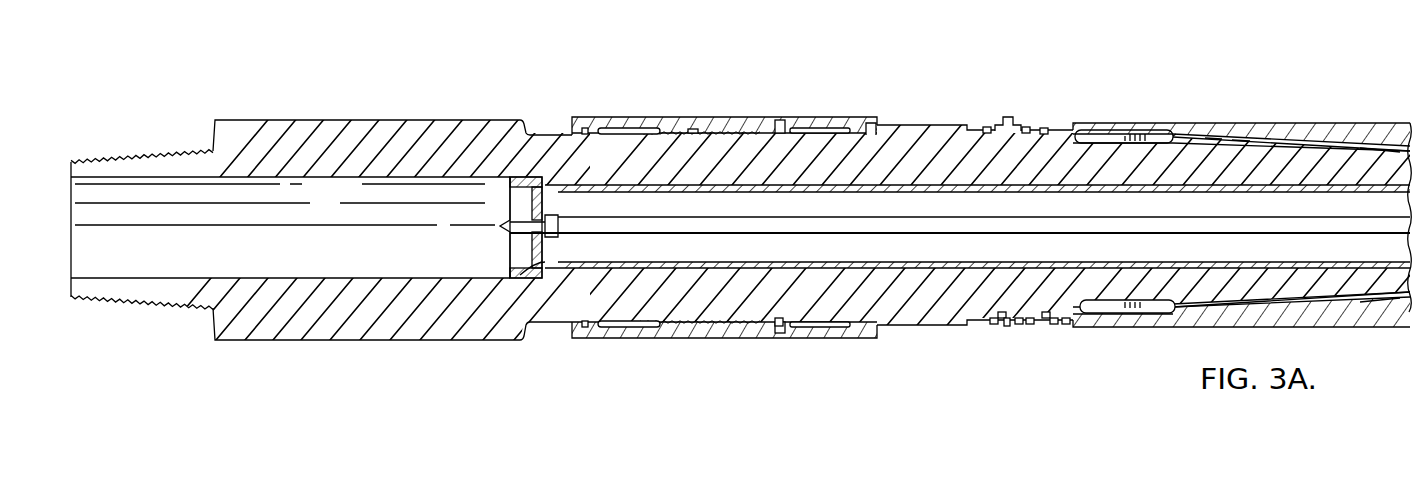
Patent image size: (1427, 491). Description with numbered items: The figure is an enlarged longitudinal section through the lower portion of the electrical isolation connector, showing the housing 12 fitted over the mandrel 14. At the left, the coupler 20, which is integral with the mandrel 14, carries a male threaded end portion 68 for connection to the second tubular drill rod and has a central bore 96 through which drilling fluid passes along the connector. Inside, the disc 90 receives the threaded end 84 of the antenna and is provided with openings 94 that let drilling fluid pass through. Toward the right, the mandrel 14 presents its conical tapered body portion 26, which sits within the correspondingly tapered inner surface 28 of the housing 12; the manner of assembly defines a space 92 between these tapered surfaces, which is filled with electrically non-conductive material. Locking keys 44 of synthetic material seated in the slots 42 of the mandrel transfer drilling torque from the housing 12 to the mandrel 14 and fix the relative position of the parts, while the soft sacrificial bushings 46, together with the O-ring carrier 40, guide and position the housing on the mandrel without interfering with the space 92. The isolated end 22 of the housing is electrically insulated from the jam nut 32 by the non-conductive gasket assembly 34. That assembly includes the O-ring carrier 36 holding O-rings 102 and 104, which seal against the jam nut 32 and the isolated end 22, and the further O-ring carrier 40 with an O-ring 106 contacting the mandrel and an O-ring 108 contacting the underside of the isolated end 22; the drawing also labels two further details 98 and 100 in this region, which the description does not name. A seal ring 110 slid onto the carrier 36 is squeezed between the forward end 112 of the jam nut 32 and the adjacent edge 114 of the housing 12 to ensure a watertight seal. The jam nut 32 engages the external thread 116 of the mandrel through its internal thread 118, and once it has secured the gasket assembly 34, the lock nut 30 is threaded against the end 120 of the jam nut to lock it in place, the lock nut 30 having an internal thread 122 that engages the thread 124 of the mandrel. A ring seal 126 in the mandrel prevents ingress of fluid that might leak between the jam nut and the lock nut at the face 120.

The housing 12 is at (1292, 118).
The mandrel 14 is at (1176, 158).
The coupler 20 is at (288, 118).
The isolated end 22 is at (1024, 126).
The conical tapered body portion 26 is at (1212, 150).
The tapered inner surface 28 is at (1322, 144).
The lock nut 30 is at (660, 118).
The jam nut 32 is at (900, 125).
The gasket assembly 34 is at (1000, 110).
The O-ring carrier 36 is at (1010, 312).
The O-ring carrier 40 is at (1058, 326).
The slots 42 is at (1120, 301).
The locking keys 44 is at (1100, 137).
The sacrificial bushings 46 is at (1382, 152).
The male threaded end portion 68 is at (126, 145).
The threaded end 84 is at (508, 225).
The disc 90 is at (538, 180).
The space 92 is at (1242, 150).
The openings 94 is at (515, 290).
The central bore 96 is at (348, 190).
The groove 98 is at (1168, 136).
The seal ring 100 is at (1053, 128).
The O-ring 102 is at (1022, 326).
The O-ring 104 is at (993, 326).
The O-ring 106 is at (1046, 312).
The O-ring 108 is at (1068, 324).
The seal ring 110 is at (1008, 328).
The forward end 112 is at (995, 128).
The adjacent edge 114 is at (1017, 328).
The external thread 116 is at (870, 134).
The internal thread 118 is at (852, 127).
The end 120 is at (780, 126).
The internal thread 122 is at (675, 128).
The thread 124 is at (694, 136).
The ring seal 126 is at (772, 326).